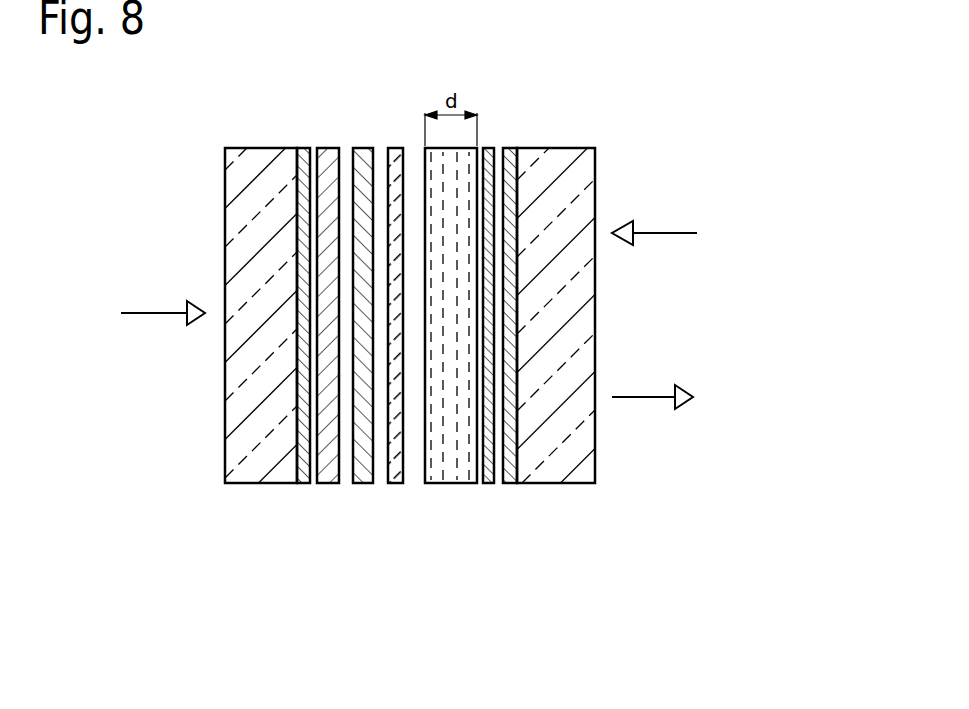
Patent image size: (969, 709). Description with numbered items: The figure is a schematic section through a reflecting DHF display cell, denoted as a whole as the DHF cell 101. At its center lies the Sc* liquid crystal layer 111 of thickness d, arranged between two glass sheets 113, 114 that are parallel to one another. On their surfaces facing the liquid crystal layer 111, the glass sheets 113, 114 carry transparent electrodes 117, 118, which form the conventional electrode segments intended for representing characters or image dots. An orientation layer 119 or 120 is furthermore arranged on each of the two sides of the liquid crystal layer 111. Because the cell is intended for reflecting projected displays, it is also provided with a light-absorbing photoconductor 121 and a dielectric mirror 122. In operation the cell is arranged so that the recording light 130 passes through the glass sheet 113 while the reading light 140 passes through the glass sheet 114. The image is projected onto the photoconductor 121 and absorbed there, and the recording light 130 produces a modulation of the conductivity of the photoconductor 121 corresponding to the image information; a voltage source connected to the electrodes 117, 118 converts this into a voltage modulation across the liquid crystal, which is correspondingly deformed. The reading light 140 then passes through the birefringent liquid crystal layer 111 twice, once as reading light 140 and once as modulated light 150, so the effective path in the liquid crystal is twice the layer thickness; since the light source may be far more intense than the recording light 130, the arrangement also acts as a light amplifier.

The DHF cell 101 is at (426, 572).
The Sc* layer 111 is at (445, 483).
The glass sheet 113 is at (255, 483).
The glass sheet 114 is at (569, 148).
The transparent electrode 117 is at (300, 148).
The transparent electrode 118 is at (507, 483).
The orientation layer 119 is at (395, 483).
The orientation layer 120 is at (483, 483).
The light-absorbing photoconductor 121 is at (324, 483).
The dielectric mirror 122 is at (362, 483).
The recording light 130 is at (152, 313).
The reading light 140 is at (647, 233).
The modulated light 150 is at (651, 397).